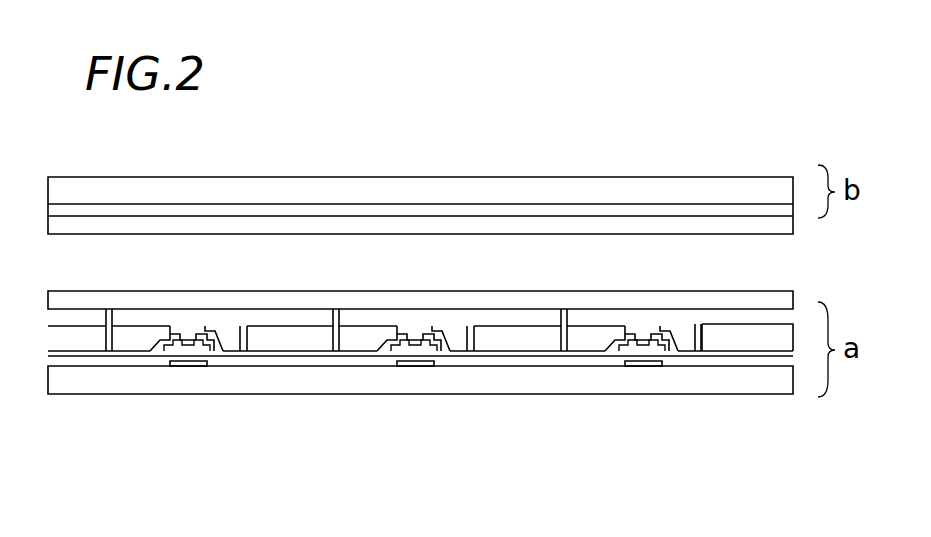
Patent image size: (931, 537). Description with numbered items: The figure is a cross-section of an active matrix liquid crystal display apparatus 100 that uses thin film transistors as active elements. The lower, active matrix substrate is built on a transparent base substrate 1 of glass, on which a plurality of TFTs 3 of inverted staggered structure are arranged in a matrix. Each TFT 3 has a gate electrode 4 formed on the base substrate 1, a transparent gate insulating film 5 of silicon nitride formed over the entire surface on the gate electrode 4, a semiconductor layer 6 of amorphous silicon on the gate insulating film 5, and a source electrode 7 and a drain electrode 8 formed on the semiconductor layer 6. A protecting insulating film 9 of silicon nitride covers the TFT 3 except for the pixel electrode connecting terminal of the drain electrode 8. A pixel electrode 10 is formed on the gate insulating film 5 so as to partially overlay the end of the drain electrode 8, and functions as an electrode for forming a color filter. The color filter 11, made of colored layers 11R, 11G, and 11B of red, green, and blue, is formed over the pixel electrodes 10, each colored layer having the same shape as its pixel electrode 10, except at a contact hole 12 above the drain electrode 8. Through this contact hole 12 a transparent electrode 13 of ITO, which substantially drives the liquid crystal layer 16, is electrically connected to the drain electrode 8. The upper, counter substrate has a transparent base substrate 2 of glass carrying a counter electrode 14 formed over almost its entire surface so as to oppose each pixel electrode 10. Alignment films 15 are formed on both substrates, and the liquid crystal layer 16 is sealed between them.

The active matrix liquid crystal display apparatus 100 is at (744, 79).
The transparent base substrate 1 is at (789, 377).
The transparent base substrate 2 is at (579, 185).
The TFT 3 is at (646, 370).
The gate electrode 4 is at (635, 360).
The gate insulating film 5 is at (748, 355).
The semiconductor layer 6 is at (408, 348).
The source electrode 7 is at (600, 352).
The drain electrode 8 is at (670, 347).
The protecting insulating film 9 is at (428, 350).
The pixel electrode 10 is at (775, 347).
The color filter 11 is at (52, 343).
The red colored layer 11R is at (307, 345).
The green colored layer 11G is at (527, 338).
The blue colored layer 11B is at (735, 335).
The contact hole 12 is at (703, 330).
The transparent electrode for driving a liquid crystal layer 13 is at (762, 317).
The counter electrode 14 is at (614, 210).
The alignment film 15 is at (648, 225).
The liquid crystal layer 16 is at (693, 267).